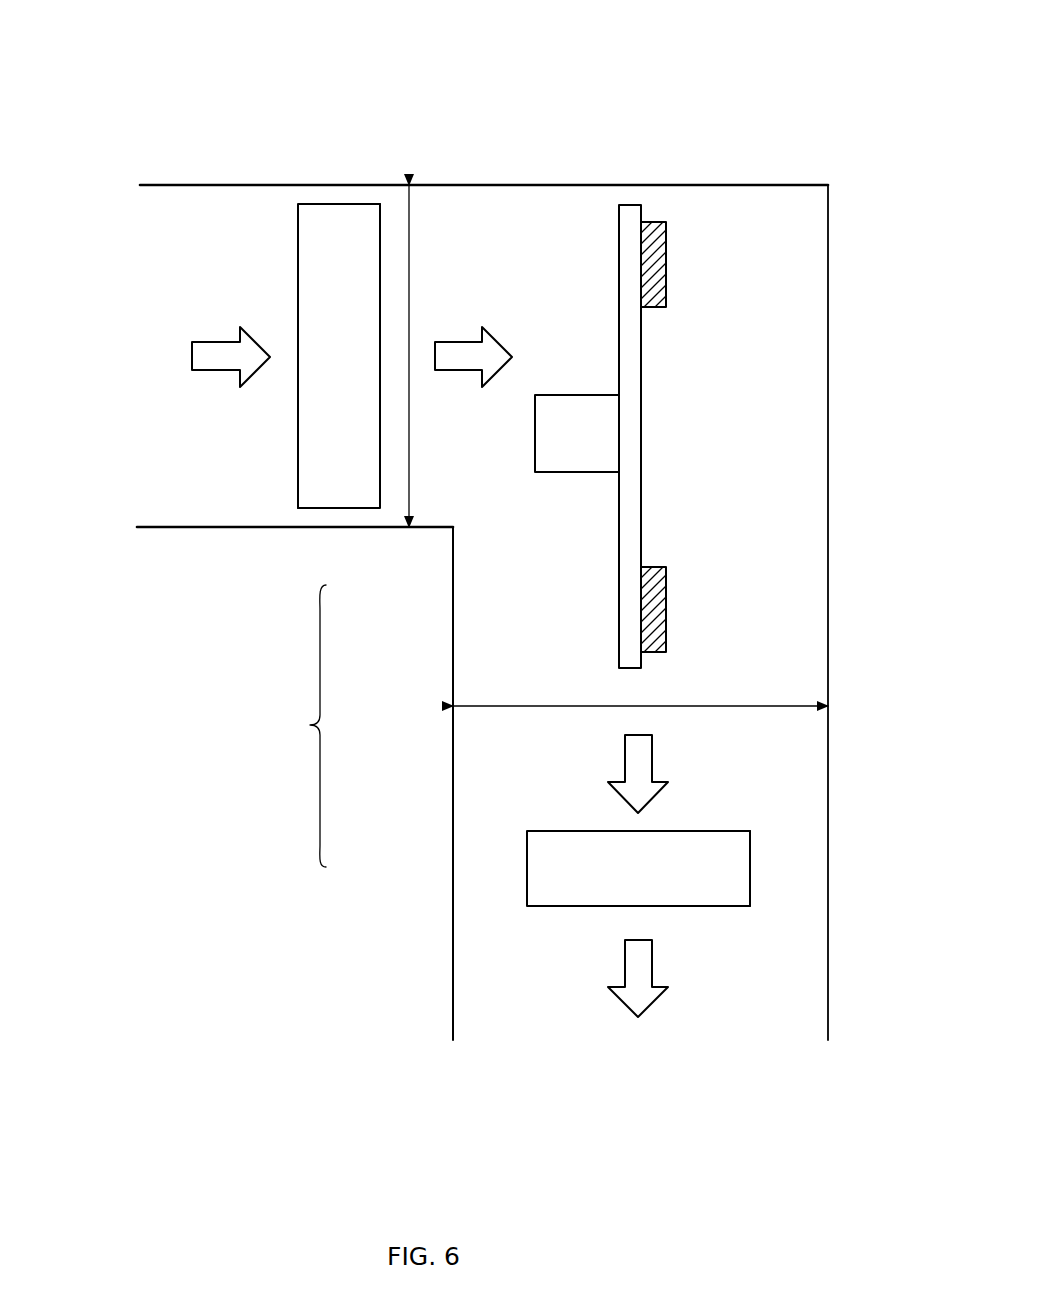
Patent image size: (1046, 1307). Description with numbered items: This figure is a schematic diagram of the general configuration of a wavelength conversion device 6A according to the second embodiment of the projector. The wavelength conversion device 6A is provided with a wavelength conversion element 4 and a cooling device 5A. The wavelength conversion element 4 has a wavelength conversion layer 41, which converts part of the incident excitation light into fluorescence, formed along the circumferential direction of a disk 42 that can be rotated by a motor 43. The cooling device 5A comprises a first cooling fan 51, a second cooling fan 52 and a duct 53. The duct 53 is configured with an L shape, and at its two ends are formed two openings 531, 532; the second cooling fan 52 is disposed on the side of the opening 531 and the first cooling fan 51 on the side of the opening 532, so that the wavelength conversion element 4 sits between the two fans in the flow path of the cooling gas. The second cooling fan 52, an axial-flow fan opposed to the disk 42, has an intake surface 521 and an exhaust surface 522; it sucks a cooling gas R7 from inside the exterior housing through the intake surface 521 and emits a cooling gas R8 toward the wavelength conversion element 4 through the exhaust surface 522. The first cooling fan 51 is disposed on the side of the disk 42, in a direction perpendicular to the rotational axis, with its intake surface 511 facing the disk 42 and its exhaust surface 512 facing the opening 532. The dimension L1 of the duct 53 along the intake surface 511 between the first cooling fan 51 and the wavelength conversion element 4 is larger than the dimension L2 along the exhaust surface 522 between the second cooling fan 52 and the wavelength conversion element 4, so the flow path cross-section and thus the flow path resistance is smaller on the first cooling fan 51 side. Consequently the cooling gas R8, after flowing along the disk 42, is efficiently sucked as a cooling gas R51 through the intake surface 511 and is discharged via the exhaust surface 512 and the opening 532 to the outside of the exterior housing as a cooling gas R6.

The wavelength conversion device 6A is at (792, 80).
The wavelength conversion element 4 is at (667, 436).
The wavelength conversion layer 41 is at (663, 605).
The disk 42 is at (628, 538).
The motor 43 is at (575, 402).
The cooling device 5A is at (299, 726).
The first cooling fan 51 is at (527, 855).
The intake surface 511 is at (715, 830).
The exhaust surface 512 is at (715, 907).
The second cooling fan 52 is at (343, 509).
The intake surface 521 is at (298, 446).
The exhaust surface 522 is at (382, 226).
The duct 53 is at (453, 652).
The opening 531 is at (125, 487).
The opening 532 is at (560, 1030).
The cooling gas R7 is at (212, 347).
The cooling gas R8 is at (456, 347).
The cooling gas R51 is at (645, 750).
The cooling gas R6 is at (645, 1000).
The dimension L1 is at (750, 705).
The dimension L2 is at (411, 440).